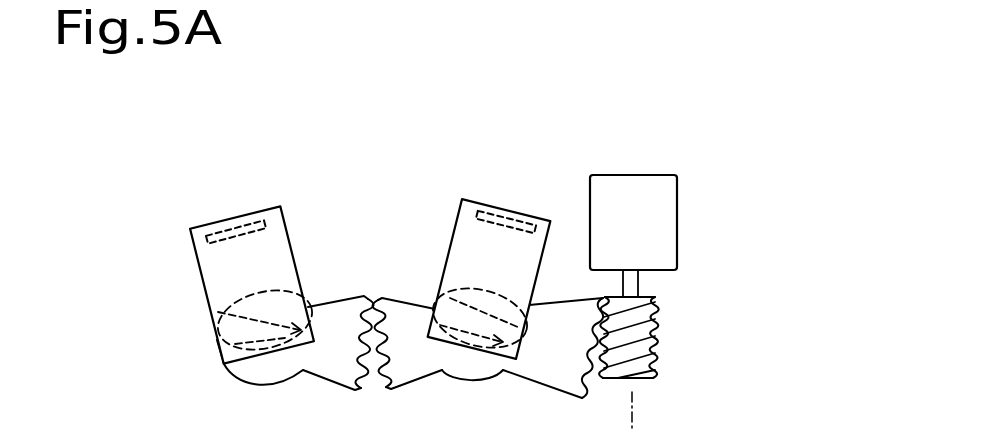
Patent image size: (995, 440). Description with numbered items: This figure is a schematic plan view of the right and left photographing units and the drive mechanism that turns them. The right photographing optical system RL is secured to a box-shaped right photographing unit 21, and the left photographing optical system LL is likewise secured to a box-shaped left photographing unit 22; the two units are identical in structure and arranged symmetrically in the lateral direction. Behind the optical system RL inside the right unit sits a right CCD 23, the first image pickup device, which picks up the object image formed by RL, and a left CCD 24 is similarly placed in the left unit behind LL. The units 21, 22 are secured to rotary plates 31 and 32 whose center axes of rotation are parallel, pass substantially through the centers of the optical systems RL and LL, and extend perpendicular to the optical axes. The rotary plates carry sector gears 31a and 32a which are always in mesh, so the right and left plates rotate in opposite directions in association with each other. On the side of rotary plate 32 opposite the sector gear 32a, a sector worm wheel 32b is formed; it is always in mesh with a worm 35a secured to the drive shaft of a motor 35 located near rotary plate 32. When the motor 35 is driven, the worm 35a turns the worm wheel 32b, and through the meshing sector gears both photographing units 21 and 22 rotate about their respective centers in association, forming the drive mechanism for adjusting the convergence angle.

The right photographing unit 21 is at (200, 230).
The left photographing unit 22 is at (463, 205).
The right CCD 23 is at (241, 230).
The left CCD 24 is at (501, 226).
The right photographing optical system RL is at (210, 307).
The left photographing optical system LL is at (437, 292).
The rotary plate 31 is at (253, 380).
The sector gear 31a is at (333, 377).
The rotary plate 32 is at (483, 377).
The sector gear 32a is at (417, 377).
The sector worm wheel 32b is at (552, 380).
The motor 35 is at (672, 188).
The worm 35a is at (653, 323).